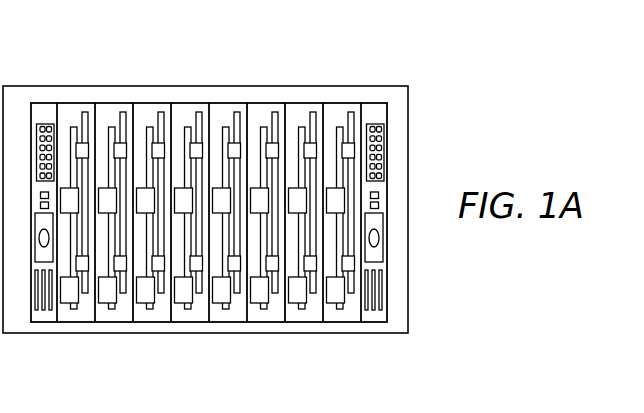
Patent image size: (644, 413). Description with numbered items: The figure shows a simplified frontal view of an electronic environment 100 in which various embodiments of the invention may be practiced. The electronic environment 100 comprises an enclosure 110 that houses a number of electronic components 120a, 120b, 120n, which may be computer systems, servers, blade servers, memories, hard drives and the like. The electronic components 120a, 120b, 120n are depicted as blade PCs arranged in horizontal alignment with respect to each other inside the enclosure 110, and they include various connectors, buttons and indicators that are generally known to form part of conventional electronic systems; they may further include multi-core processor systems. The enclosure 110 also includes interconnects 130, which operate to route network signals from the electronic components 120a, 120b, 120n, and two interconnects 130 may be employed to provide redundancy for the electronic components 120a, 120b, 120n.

The electronic environment 100 is at (455, 57).
The enclosure 110 is at (408, 135).
The interconnects 130 is at (47, 103).
The electronic component 120a is at (80, 322).
The electronic component 120b is at (157, 103).
The electronic component 120n is at (362, 312).